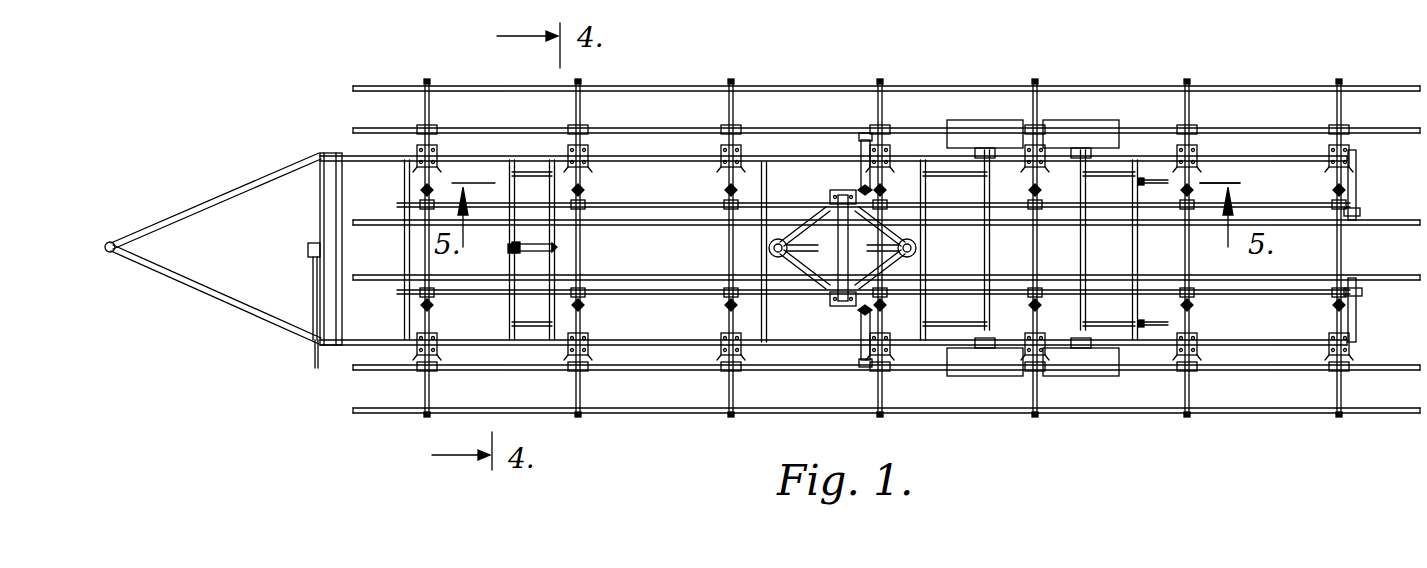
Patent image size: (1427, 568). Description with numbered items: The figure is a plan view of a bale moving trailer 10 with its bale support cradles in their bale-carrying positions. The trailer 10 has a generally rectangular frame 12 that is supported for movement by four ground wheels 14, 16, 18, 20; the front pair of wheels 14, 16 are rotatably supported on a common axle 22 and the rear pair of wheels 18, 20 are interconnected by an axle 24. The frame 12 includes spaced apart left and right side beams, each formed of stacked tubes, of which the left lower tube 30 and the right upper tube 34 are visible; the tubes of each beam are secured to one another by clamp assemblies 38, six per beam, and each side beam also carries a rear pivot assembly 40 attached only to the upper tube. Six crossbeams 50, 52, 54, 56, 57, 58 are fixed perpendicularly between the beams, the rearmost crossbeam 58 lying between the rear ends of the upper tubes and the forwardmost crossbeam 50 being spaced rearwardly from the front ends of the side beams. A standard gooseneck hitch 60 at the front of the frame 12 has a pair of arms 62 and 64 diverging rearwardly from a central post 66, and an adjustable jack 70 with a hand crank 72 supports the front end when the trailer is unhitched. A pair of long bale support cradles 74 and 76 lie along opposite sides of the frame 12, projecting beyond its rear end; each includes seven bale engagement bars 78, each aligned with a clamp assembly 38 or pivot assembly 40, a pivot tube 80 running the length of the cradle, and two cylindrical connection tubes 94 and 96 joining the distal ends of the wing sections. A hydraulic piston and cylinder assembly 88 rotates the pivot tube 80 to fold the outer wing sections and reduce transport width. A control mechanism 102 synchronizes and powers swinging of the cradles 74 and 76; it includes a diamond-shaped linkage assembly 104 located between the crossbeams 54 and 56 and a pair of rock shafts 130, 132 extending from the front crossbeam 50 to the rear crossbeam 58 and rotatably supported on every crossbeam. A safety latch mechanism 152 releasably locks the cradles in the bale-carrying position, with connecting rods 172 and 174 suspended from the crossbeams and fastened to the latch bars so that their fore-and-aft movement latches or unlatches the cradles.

The bale moving trailer 10 is at (1356, 82).
The frame 12 is at (1357, 181).
The ground wheel 14 is at (986, 378).
The ground wheel 16 is at (976, 120).
The ground wheel 18 is at (1096, 376).
The ground wheel 20 is at (1090, 120).
The axle 22 is at (989, 247).
The axle 24 is at (1086, 247).
The lower tube 30 is at (1295, 340).
The upper tube 34 is at (1262, 158).
The clamp assembly 38 is at (594, 150).
The rear pivot assembly 40 is at (1357, 148).
The crossbeam 50 is at (402, 246).
The crossbeam 52 is at (562, 248).
The crossbeam 54 is at (770, 186).
The crossbeam 56 is at (920, 237).
The crossbeam 57 is at (1144, 247).
The crossbeam 58 is at (1345, 250).
The gooseneck hitch 60 is at (223, 249).
The arm 62 is at (196, 290).
The arm 64 is at (172, 214).
The central post 66 is at (115, 247).
The adjustable jack 70 is at (306, 246).
The hand crank 72 is at (310, 352).
The bale support cradle 74 is at (718, 417).
The bale support cradle 76 is at (716, 80).
The bale engagement bar 78 is at (424, 109).
The pivot tube 80 is at (1414, 128).
The hydraulic piston and cylinder assembly 88 is at (862, 140).
The connection tube 94 is at (1419, 225).
The connection tube 96 is at (514, 88).
The control mechanism 102 is at (825, 248).
The diamond-shaped linkage assembly 104 is at (916, 272).
The rock shaft 130 is at (1360, 290).
The rock shaft 132 is at (1258, 204).
The safety latch mechanism 152 is at (504, 252).
The connecting rod 172 is at (638, 320).
The connecting rod 174 is at (604, 178).